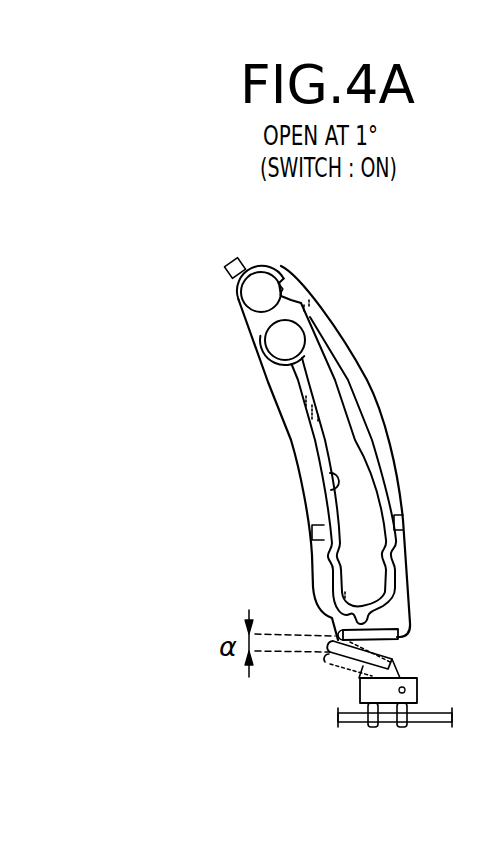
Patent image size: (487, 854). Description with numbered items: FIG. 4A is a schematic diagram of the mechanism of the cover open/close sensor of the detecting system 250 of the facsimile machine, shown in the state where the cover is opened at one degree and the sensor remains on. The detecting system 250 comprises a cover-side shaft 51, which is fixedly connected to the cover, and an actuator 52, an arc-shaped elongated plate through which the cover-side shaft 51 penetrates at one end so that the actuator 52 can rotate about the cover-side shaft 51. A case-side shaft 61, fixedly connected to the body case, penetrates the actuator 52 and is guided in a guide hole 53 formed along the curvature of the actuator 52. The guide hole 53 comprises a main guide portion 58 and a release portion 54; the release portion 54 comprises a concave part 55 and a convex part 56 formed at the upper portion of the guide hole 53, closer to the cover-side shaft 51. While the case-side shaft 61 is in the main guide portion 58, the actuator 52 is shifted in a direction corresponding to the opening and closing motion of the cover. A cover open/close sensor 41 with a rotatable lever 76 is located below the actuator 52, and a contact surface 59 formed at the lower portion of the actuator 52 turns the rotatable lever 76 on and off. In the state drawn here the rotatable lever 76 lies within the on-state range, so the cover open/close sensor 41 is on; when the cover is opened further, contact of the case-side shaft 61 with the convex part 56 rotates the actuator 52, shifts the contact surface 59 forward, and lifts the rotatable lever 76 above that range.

The detecting system 250 is at (190, 579).
The cover-side shaft 51 is at (265, 289).
The actuator 52 is at (328, 332).
The guide hole 53 is at (353, 442).
The release portion 54 is at (283, 468).
The concave part 55 is at (318, 361).
The convex part 56 is at (298, 375).
The main guide portion 58 is at (340, 487).
The contact surface 59 is at (398, 641).
The case-side shaft 61 is at (286, 340).
The rotatable lever 76 is at (333, 661).
The cover open/close sensor 41 is at (417, 688).